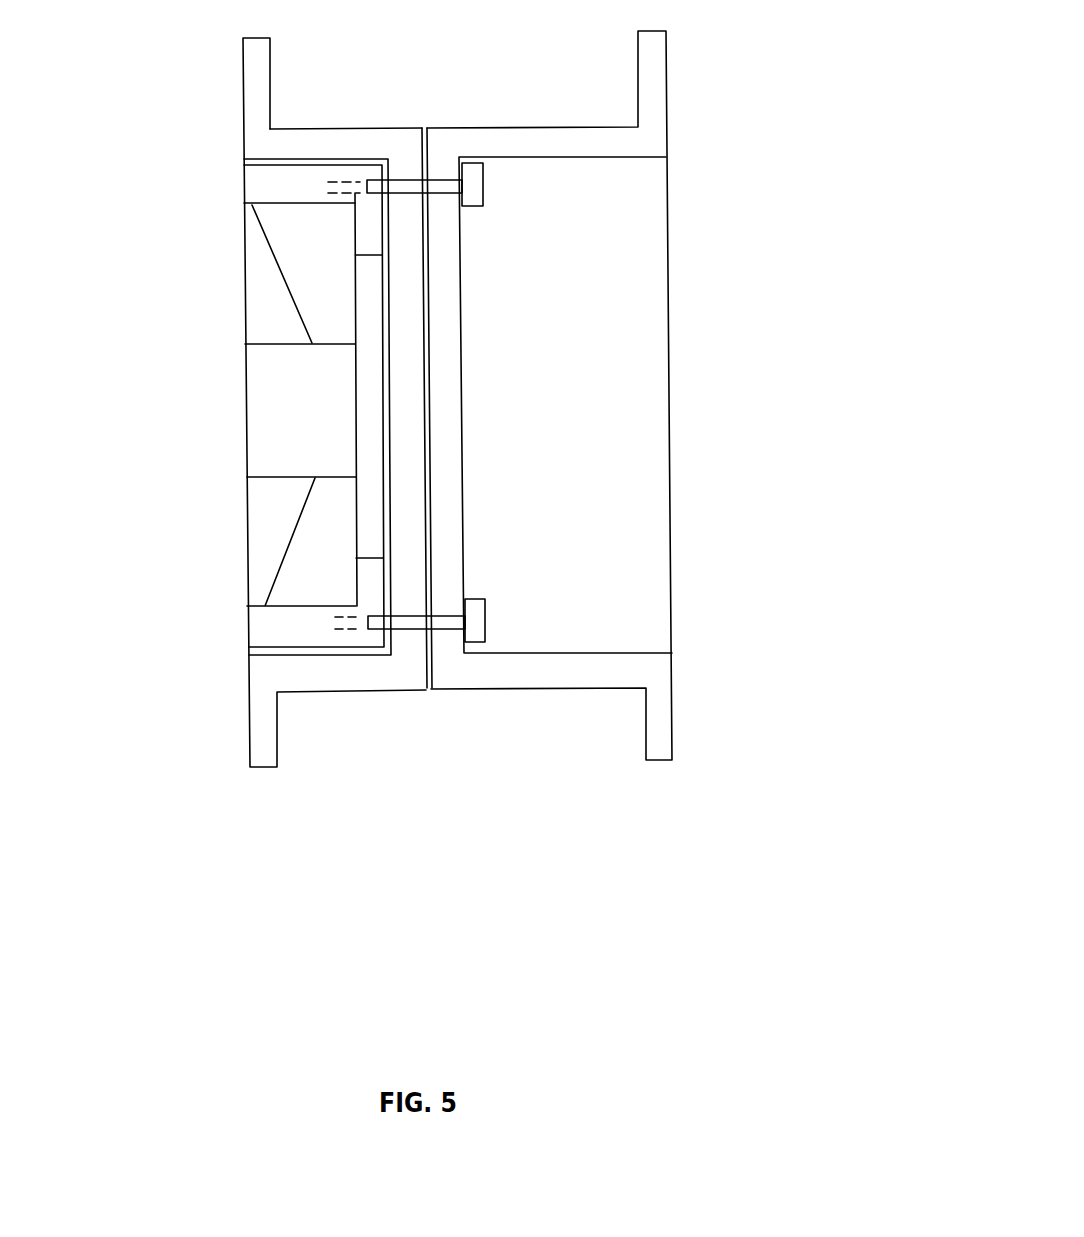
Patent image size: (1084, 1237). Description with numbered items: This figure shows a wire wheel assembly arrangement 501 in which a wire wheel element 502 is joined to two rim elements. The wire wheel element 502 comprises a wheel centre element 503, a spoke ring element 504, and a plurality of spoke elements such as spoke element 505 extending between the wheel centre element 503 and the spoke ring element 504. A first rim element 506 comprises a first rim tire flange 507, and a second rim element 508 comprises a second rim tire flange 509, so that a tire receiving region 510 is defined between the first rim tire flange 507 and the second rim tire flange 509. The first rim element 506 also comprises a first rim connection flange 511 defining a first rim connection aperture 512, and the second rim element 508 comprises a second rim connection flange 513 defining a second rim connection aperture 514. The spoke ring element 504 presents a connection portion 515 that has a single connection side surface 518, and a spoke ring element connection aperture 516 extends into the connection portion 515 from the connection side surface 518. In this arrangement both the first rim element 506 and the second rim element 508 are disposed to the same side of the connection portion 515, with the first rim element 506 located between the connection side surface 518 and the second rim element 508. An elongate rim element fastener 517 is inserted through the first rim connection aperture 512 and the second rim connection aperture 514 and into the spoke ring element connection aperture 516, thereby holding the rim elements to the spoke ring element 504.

The wire wheel assembly arrangement 501 is at (446, 850).
The wire wheel element 502 is at (275, 416).
The wheel centre element 503 is at (273, 481).
The spoke ring element 504 is at (263, 623).
The spoke element 505 is at (282, 557).
The first rim element 506 is at (400, 670).
The first rim tire flange 507 is at (270, 748).
The second rim element 508 is at (515, 668).
The second rim tire flange 509 is at (658, 745).
The tire receiving region 510 is at (430, 769).
The first rim connection flange 511 is at (383, 150).
The first rim connection aperture 512 is at (404, 178).
The second rim connection flange 513 is at (442, 178).
The second rim connection aperture 514 is at (465, 150).
The connection portion 515 is at (285, 187).
The spoke ring element connection aperture 516 is at (355, 193).
The elongate rim element fastener 517 is at (472, 189).
The connection side surface 518 is at (392, 308).